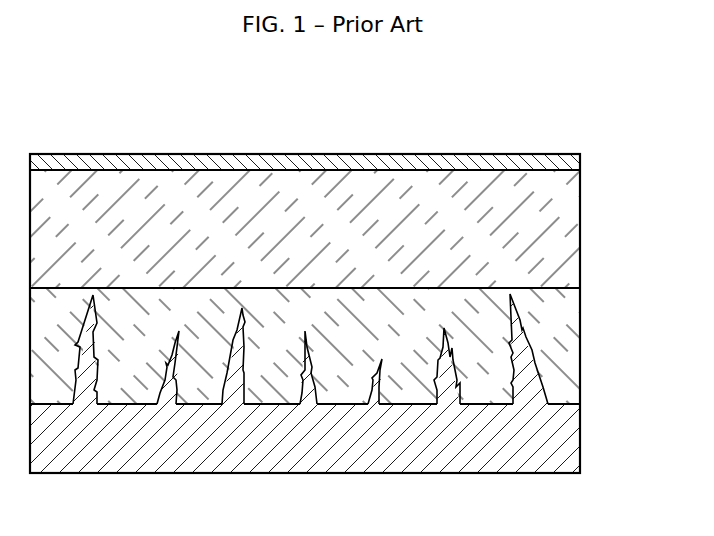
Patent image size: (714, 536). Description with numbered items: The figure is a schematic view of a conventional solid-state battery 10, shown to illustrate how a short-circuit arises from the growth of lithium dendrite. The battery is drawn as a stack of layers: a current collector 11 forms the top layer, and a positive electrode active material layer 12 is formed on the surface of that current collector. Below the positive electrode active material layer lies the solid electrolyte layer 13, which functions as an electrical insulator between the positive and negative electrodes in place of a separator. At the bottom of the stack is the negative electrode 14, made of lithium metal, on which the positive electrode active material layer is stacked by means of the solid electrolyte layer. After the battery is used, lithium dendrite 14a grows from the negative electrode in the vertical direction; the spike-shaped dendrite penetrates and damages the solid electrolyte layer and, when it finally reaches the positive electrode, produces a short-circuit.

The solid-state battery 10 is at (107, 104).
The current collector 11 is at (581, 162).
The positive electrode active material layer 12 is at (581, 232).
The solid electrolyte layer 13 is at (581, 318).
The negative electrode 14 is at (581, 439).
The lithium dendrite 14a is at (525, 359).